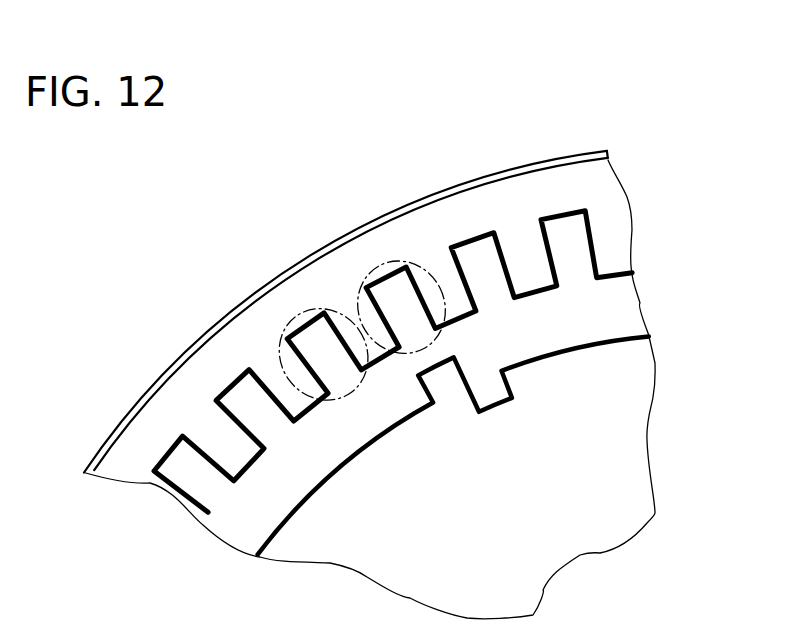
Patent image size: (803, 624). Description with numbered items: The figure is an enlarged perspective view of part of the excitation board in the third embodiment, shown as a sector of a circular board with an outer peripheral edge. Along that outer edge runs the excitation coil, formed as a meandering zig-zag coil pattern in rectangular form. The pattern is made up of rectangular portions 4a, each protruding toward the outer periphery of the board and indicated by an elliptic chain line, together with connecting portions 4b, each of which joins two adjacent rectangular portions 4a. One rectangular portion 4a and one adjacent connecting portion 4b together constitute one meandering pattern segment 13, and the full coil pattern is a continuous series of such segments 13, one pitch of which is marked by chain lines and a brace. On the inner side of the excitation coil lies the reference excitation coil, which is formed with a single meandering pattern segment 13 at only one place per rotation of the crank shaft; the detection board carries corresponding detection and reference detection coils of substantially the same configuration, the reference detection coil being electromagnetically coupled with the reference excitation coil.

The rectangular portion 4a is at (380, 258).
The connecting portion 4b is at (384, 357).
The meandering pattern segment 13 is at (542, 219).